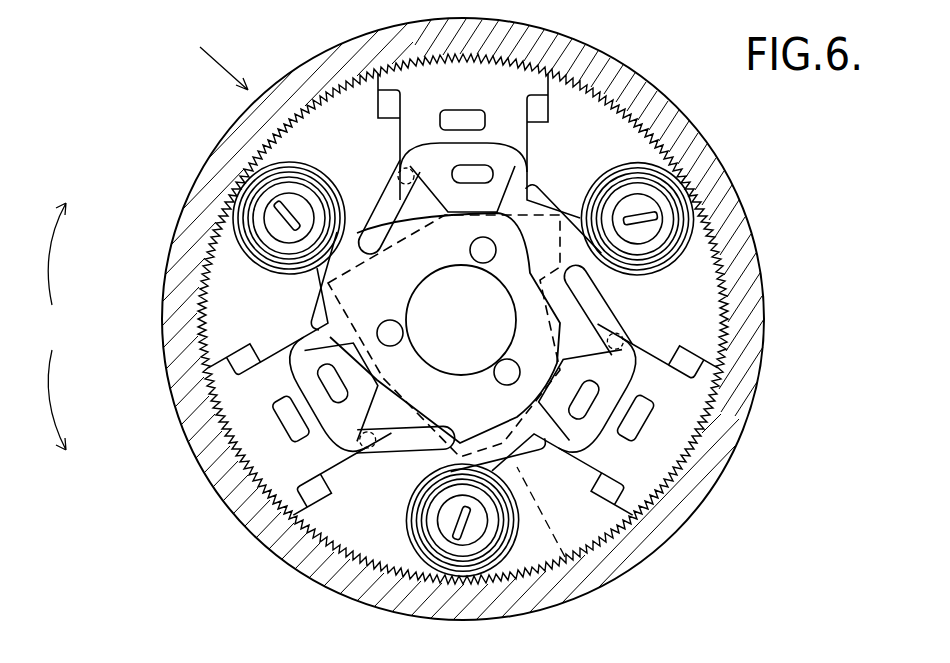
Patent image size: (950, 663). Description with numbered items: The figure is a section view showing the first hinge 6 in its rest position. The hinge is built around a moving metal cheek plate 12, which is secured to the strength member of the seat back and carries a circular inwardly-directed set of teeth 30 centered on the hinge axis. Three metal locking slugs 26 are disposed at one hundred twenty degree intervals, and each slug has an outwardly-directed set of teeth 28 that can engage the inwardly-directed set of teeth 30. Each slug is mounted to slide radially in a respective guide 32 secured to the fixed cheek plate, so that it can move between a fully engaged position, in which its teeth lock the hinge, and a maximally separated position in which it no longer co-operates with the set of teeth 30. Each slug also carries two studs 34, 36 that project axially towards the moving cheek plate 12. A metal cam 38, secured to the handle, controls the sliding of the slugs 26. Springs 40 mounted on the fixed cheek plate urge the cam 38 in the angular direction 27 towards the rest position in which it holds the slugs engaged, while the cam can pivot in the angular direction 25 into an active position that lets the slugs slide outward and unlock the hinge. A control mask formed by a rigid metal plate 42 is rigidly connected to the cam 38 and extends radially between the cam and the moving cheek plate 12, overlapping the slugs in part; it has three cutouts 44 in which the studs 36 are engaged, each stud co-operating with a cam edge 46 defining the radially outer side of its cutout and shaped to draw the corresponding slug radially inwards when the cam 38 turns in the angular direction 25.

The first hinge 6 is at (214, 56).
The moving metal cheek plate 12 is at (722, 455).
The angular direction 25 is at (67, 254).
The metal locking slugs 26 is at (402, 83).
The angular direction 27 is at (70, 400).
The outwardly-directed set of teeth 28 is at (402, 83).
The inwardly-directed set of teeth 30 is at (732, 240).
The guide 32 is at (410, 152).
The stud 34 is at (470, 117).
The stud 36 is at (472, 176).
The metal cam 38 is at (565, 557).
The springs 40 is at (317, 307).
The rigid metal plate 42 is at (553, 312).
The cutouts 44 is at (410, 207).
The cam edge 46 is at (408, 147).